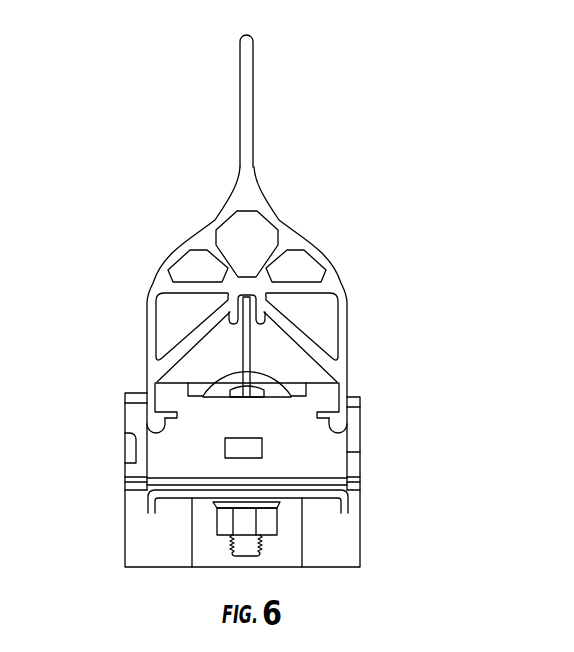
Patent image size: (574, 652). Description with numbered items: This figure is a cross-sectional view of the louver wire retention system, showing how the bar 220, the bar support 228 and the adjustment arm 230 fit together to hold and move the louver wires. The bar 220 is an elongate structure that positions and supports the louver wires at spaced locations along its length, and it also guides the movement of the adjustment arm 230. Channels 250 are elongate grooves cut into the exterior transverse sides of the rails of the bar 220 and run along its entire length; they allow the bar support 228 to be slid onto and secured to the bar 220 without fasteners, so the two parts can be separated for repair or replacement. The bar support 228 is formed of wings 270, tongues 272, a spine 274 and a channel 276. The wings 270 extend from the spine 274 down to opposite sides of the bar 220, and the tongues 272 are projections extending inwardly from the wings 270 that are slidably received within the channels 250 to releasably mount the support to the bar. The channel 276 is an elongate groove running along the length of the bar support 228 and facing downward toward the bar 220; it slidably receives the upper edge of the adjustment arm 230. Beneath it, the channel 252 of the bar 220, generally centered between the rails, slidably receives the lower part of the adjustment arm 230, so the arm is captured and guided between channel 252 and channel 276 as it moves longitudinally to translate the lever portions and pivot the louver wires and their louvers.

The bar 220 is at (349, 484).
The bar support 228 is at (196, 243).
The adjustment arm 230 is at (248, 343).
The channels 250 is at (158, 436).
The channel 252 is at (245, 399).
The wings 270 is at (150, 318).
The tongues 272 is at (173, 410).
The spine 274 is at (255, 126).
The channel 276 is at (232, 311).